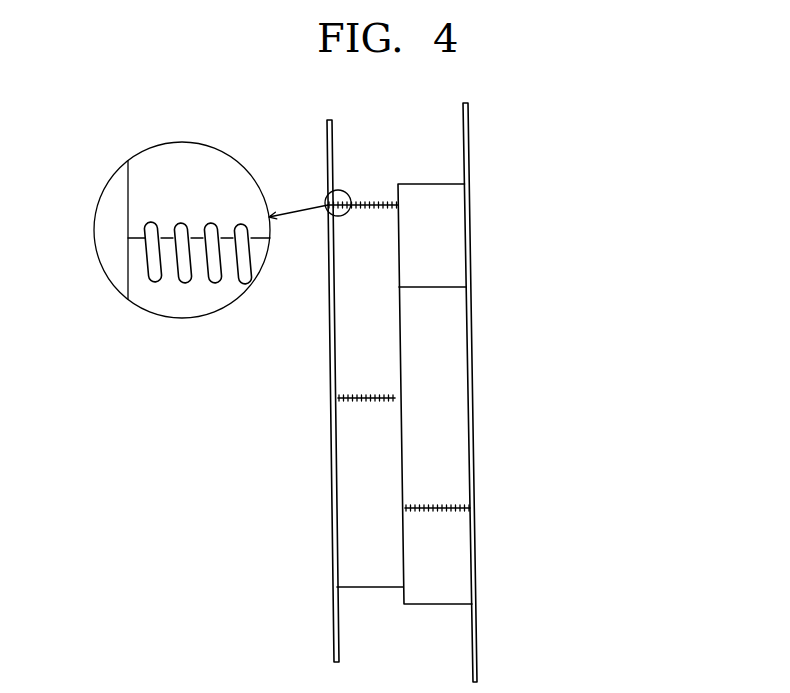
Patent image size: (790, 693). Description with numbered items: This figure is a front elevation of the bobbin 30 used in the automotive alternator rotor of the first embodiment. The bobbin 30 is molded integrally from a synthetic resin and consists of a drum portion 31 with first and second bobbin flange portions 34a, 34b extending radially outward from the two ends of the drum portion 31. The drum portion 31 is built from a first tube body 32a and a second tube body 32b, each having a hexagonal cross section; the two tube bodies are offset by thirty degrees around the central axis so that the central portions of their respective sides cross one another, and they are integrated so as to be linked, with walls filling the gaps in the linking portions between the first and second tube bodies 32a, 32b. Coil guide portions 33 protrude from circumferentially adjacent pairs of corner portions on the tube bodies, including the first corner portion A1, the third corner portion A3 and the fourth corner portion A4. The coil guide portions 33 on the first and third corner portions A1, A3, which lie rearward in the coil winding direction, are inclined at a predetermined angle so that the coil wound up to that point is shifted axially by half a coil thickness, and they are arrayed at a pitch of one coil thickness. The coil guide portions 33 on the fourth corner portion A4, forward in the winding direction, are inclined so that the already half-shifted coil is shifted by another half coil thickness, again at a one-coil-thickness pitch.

The bobbin 30 is at (265, 92).
The drum portion 31 is at (405, 171).
The first tube body 32a is at (458, 242).
The second tube body 32b is at (352, 345).
The coil guide portions 33 is at (150, 253).
The first bobbin flange portion 34a is at (470, 148).
The second bobbin flange portion 34b is at (320, 142).
The first corner portion A1 is at (458, 512).
The third corner portion A3 is at (355, 208).
The fourth corner portion A4 is at (358, 403).